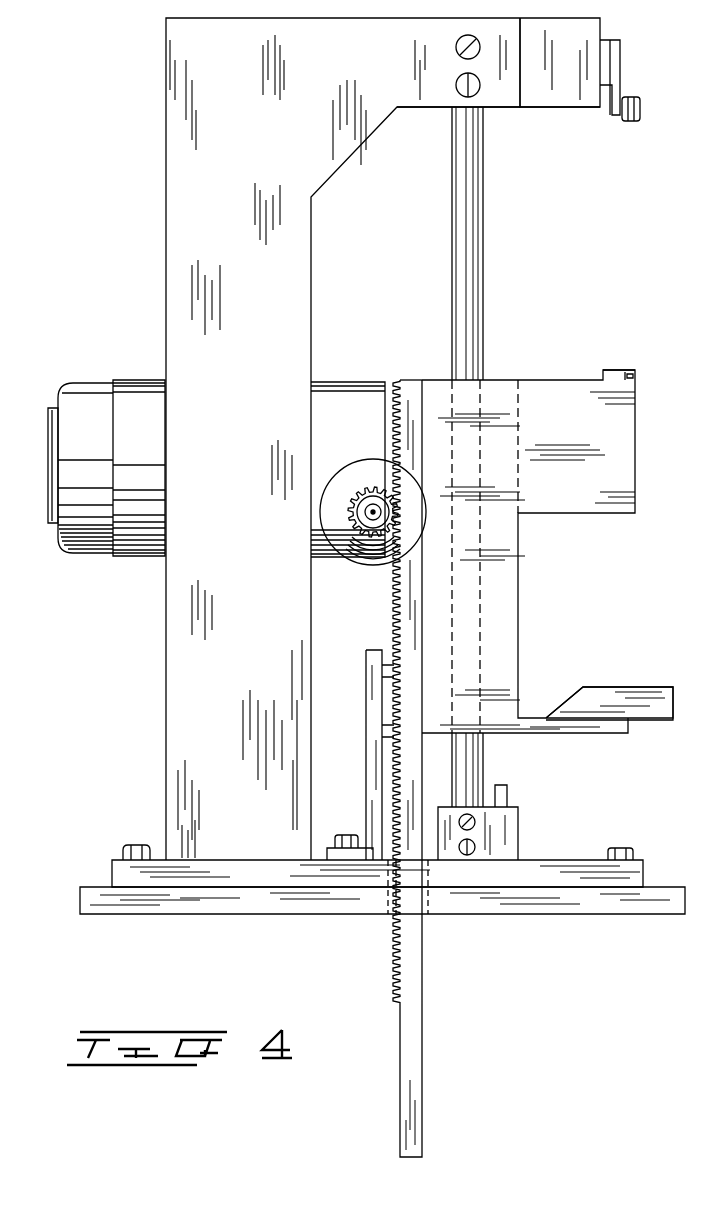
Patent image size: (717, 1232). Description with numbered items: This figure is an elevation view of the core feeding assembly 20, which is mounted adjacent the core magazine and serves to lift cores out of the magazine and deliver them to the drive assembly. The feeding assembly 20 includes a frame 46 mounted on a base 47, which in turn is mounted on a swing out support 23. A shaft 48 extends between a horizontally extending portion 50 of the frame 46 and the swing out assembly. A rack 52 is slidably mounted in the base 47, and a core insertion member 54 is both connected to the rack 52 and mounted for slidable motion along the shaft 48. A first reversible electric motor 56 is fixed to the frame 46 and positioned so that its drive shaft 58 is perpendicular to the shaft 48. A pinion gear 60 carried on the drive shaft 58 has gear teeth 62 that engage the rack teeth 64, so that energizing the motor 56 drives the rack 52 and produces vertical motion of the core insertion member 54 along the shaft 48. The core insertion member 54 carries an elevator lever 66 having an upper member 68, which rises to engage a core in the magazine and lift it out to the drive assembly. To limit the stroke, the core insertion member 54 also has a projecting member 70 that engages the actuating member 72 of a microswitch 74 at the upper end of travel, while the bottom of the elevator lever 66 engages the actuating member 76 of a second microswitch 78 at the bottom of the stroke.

The feeding assembly 20 is at (130, 197).
The swing out support 23 is at (115, 905).
The frame 46 is at (305, 318).
The base 47 is at (118, 862).
The shaft 48 is at (475, 286).
The horizontally extending portion 50 is at (428, 110).
The rack 52 is at (396, 605).
The core insertion member 54 is at (508, 385).
The first reversible electric motor 56 is at (138, 540).
The drive shaft 58 is at (374, 504).
The pinion gear 60 is at (360, 545).
The gear teeth 62 is at (357, 490).
The rack teeth 64 is at (400, 382).
The elevator lever 66 is at (637, 730).
The upper member 68 is at (648, 687).
The projecting member 70 is at (618, 372).
The actuating member 72 is at (632, 121).
The microswitch 74 is at (545, 110).
The actuating member 76 is at (510, 797).
The microswitch 78 is at (520, 836).